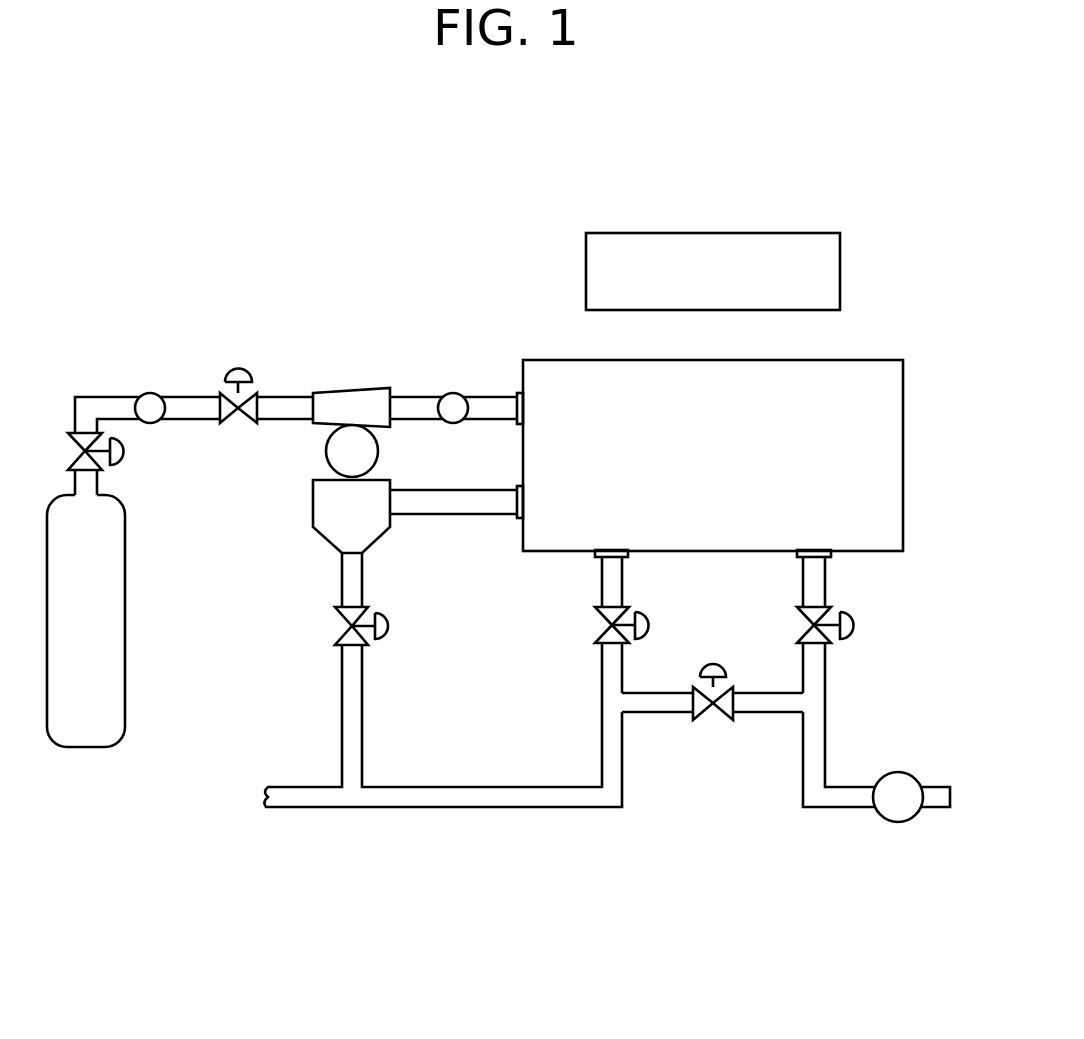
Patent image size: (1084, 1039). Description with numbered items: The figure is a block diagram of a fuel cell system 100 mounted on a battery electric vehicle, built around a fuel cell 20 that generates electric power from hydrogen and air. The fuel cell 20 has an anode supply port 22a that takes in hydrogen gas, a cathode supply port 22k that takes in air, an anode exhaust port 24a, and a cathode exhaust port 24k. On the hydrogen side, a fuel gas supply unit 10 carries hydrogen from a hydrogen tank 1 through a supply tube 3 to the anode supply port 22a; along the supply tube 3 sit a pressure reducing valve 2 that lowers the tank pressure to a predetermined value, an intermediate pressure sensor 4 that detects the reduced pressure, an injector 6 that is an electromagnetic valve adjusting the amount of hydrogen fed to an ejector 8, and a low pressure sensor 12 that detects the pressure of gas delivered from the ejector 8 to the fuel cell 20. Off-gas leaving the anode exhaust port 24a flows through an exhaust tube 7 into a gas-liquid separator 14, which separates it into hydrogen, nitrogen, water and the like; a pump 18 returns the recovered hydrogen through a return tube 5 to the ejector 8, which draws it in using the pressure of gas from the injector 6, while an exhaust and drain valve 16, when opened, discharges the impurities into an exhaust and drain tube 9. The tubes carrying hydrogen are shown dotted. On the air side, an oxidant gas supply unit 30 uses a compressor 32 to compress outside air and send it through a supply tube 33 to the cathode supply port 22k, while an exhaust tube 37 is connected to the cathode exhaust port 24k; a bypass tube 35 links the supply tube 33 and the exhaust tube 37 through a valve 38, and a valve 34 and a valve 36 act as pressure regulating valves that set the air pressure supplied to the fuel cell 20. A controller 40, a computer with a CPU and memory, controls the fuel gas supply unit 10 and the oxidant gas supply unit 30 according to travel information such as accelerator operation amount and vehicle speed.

The fuel cell system 100 is at (282, 236).
The fuel gas supply unit 10 is at (192, 372).
The hydrogen tank 1 is at (126, 622).
The pressure reducing valve 2 is at (127, 451).
The supply tube 3 is at (104, 396).
The intermediate pressure sensor 4 is at (148, 393).
The injector 6 is at (236, 368).
The ejector 8 is at (352, 388).
The low pressure sensor 12 is at (452, 393).
The pump 18 is at (325, 451).
The return tube 5 is at (300, 514).
The gas-liquid separator 14 is at (312, 486).
The exhaust tube 7 is at (455, 505).
The exhaust and drain tube 9 is at (345, 748).
The exhaust and drain valve 16 is at (335, 626).
The fuel cell 20 is at (877, 360).
The anode supply port 22a is at (517, 396).
The anode exhaust port 24a is at (520, 520).
The cathode supply port 22k is at (826, 558).
The cathode exhaust port 24k is at (622, 558).
The oxidant gas supply unit 30 is at (748, 828).
The compressor 32 is at (898, 822).
The supply tube 33 is at (828, 748).
The valve 34 is at (797, 625).
The bypass tube 35 is at (658, 712).
The valve 36 is at (594, 625).
The exhaust tube 37 is at (600, 745).
The valve 38 is at (716, 720).
The controller 40 is at (713, 232).